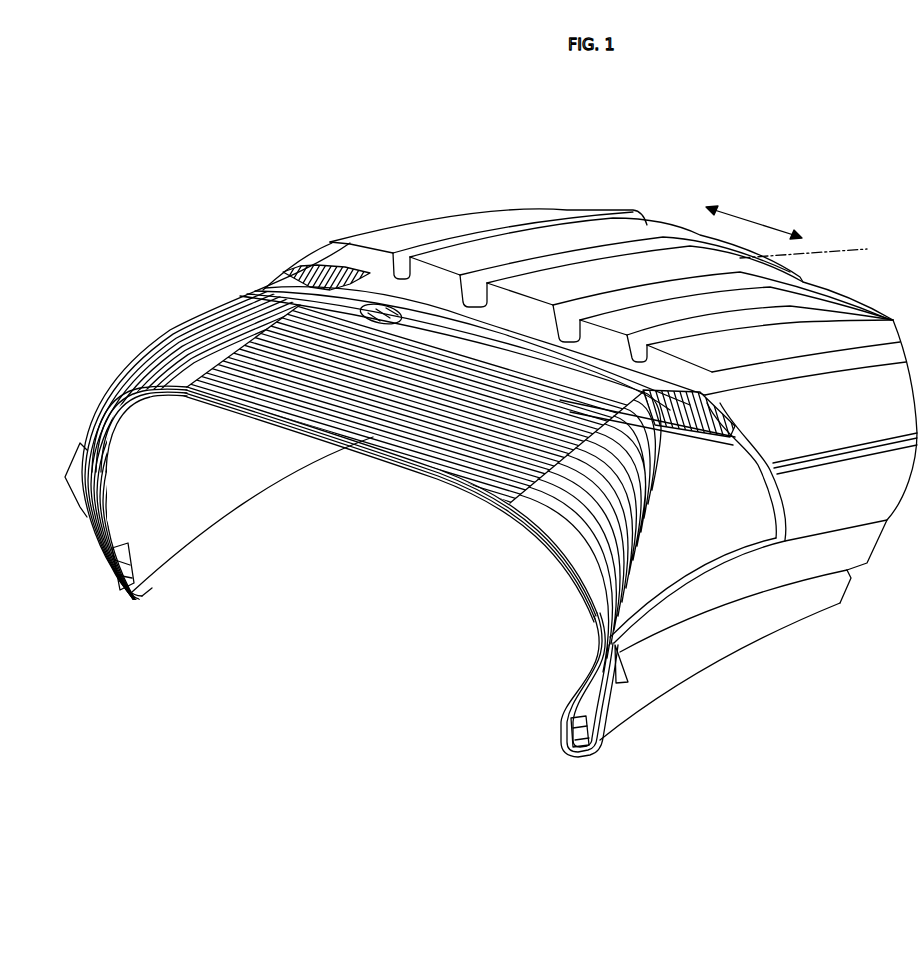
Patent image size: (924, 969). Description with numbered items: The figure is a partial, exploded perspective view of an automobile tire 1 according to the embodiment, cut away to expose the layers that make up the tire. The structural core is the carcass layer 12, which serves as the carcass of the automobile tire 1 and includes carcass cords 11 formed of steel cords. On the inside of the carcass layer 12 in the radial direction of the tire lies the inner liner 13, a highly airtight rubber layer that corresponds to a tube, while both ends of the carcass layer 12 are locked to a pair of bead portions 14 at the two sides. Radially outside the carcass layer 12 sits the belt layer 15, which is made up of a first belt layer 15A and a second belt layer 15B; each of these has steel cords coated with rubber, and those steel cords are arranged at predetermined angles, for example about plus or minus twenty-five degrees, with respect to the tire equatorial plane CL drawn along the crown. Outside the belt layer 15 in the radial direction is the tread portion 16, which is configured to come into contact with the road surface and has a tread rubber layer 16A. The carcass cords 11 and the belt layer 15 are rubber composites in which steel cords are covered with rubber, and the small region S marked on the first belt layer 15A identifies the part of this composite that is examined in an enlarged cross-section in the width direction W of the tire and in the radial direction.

The automobile tire 1 is at (143, 222).
The carcass cords 11 is at (250, 357).
The carcass layer 12 is at (155, 355).
The inner liner 13 is at (245, 470).
The bead portions 14 is at (110, 580).
The belt layer 15 is at (440, 178).
The first belt layer 15A is at (380, 316).
The second belt layer 15B is at (413, 328).
The tread portion 16 is at (279, 266).
The tread rubber layer 16A is at (525, 243).
The region of the first belt layer S is at (376, 323).
The tire width direction W is at (754, 216).
The tire equatorial plane CL is at (840, 250).